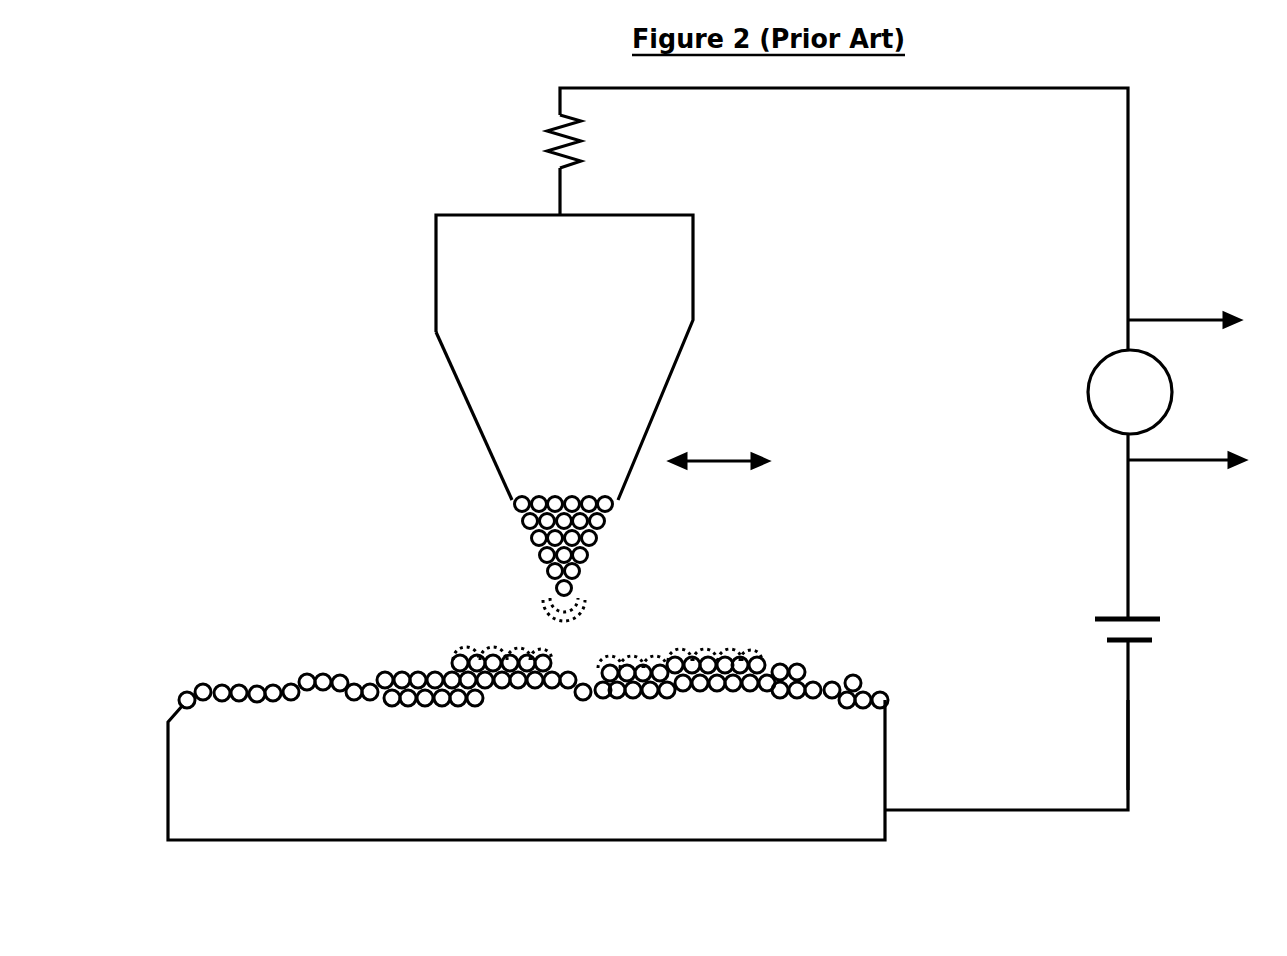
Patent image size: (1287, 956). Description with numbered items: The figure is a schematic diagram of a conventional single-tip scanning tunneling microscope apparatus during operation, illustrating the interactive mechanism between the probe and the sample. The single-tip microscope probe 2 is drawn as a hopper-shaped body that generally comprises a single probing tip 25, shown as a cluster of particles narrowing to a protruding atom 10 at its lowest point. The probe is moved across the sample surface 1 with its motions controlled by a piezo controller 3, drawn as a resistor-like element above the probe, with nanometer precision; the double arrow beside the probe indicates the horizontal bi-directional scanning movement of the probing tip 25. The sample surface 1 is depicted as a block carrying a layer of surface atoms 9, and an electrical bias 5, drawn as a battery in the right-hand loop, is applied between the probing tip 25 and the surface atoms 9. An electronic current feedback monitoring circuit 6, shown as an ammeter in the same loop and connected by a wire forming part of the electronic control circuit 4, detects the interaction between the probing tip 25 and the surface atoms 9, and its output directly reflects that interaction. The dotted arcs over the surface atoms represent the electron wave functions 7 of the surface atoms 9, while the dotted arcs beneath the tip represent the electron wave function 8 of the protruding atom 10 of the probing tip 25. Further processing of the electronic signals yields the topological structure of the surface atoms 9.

The sample surface 1 is at (195, 760).
The single-tip microscope probe 2 is at (480, 370).
The piezo controller 3 is at (548, 132).
The electronic control circuit 4 is at (1128, 740).
The electrical bias 5 is at (1133, 617).
The electronic current feedback monitoring circuit 6 is at (1172, 388).
The electron wave functions 7 is at (762, 650).
The electron wave function 8 is at (593, 604).
The surface atoms 9 is at (180, 688).
The protruding atom 10 is at (555, 586).
The probing tip 25 is at (624, 501).